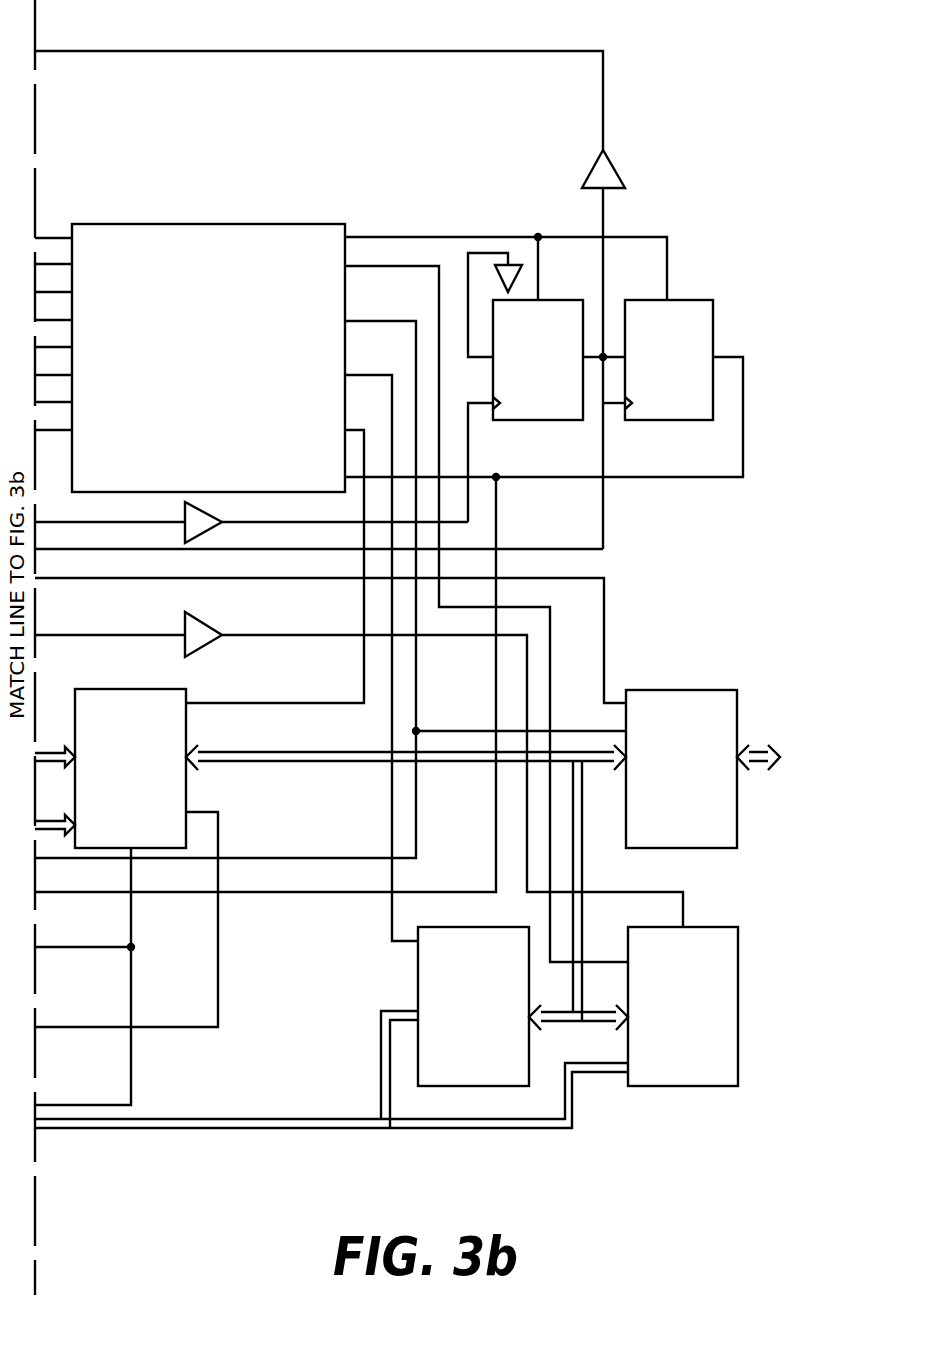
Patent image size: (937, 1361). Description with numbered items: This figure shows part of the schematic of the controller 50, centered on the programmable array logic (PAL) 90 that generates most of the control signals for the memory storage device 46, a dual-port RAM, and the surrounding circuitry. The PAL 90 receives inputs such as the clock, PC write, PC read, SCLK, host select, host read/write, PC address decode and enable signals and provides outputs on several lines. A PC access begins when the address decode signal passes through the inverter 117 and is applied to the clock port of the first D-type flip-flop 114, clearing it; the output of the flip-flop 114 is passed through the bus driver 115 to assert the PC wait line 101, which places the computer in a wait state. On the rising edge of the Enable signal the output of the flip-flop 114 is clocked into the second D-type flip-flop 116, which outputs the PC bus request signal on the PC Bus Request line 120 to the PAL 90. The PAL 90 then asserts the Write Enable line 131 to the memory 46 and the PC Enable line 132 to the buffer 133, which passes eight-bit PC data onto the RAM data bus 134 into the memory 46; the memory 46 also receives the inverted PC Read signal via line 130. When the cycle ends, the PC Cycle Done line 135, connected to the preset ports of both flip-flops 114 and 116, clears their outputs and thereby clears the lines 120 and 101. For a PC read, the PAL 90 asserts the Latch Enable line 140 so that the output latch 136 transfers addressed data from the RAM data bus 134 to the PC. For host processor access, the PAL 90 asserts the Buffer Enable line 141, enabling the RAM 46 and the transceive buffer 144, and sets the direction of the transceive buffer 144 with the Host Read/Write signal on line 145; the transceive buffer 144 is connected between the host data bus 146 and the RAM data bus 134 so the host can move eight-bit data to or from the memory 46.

The controller 50 is at (738, 110).
The PC wait line 101 is at (161, 52).
The bus driver 115 is at (614, 170).
The programmable array logic (PAL) 90 is at (186, 224).
The PC Cycle Done line 135 is at (397, 237).
The Latch Enable line 140 is at (365, 267).
The Buffer Enable line 141 is at (354, 322).
The PC Enable line 132 is at (392, 921).
The Write Enable line 131 is at (276, 704).
The PC Bus Request line 120 is at (648, 477).
The first D-type flip-flop 114 is at (561, 300).
The second D-type flip-flop 116 is at (690, 299).
The inverter 117 is at (208, 507).
The Host Read/Write signal line 145 is at (606, 578).
The memory storage device 46 is at (160, 689).
The inverted PC Read signal line 130 is at (222, 1027).
The RAM data bus 134 is at (292, 752).
The transceive buffer 144 is at (705, 690).
The host data bus 146 is at (757, 766).
The buffer 133 is at (418, 975).
The output latch 136 is at (705, 927).